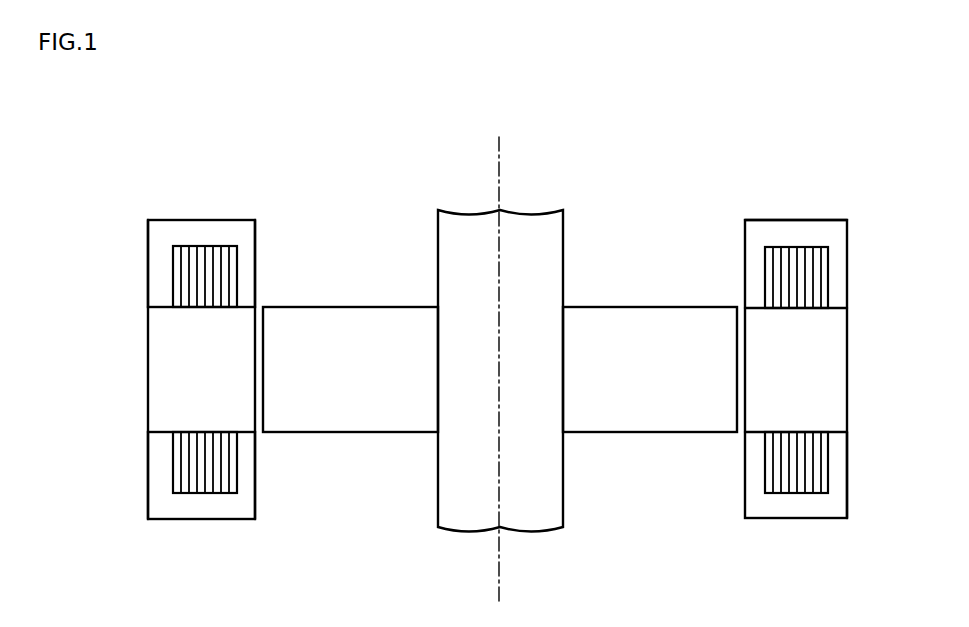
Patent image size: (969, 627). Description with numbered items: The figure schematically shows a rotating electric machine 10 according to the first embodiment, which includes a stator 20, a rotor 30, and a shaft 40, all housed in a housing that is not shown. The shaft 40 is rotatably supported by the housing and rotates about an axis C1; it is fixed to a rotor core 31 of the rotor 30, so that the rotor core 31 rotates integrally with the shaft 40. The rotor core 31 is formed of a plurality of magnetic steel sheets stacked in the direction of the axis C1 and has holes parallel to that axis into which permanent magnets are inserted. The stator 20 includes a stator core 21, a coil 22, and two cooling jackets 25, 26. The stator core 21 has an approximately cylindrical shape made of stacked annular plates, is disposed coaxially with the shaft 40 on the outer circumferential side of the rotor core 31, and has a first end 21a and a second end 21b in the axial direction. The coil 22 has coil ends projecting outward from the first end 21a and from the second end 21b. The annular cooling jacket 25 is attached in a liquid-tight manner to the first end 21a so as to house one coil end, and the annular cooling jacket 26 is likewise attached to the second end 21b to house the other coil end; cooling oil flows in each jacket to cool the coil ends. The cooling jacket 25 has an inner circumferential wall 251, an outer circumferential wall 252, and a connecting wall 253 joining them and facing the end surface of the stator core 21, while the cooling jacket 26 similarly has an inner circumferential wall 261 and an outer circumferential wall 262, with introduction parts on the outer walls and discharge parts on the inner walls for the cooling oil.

The rotating electric machine 10 is at (869, 136).
The stator 20 is at (870, 294).
The stator core 21 is at (848, 370).
The first end 21a is at (836, 300).
The second end 21b is at (836, 436).
The coil 22 is at (816, 541).
The cooling jacket 25 is at (228, 220).
The inner circumferential wall 251 is at (256, 262).
The outer circumferential wall 252 is at (147, 262).
The connecting wall 253 is at (178, 220).
The cooling jacket 26 is at (208, 520).
The inner circumferential wall 261 is at (256, 477).
The outer circumferential wall 262 is at (147, 477).
The rotor 30 is at (661, 446).
The rotor core 31 is at (648, 316).
The shaft 40 is at (533, 513).
The axis C1 is at (500, 150).